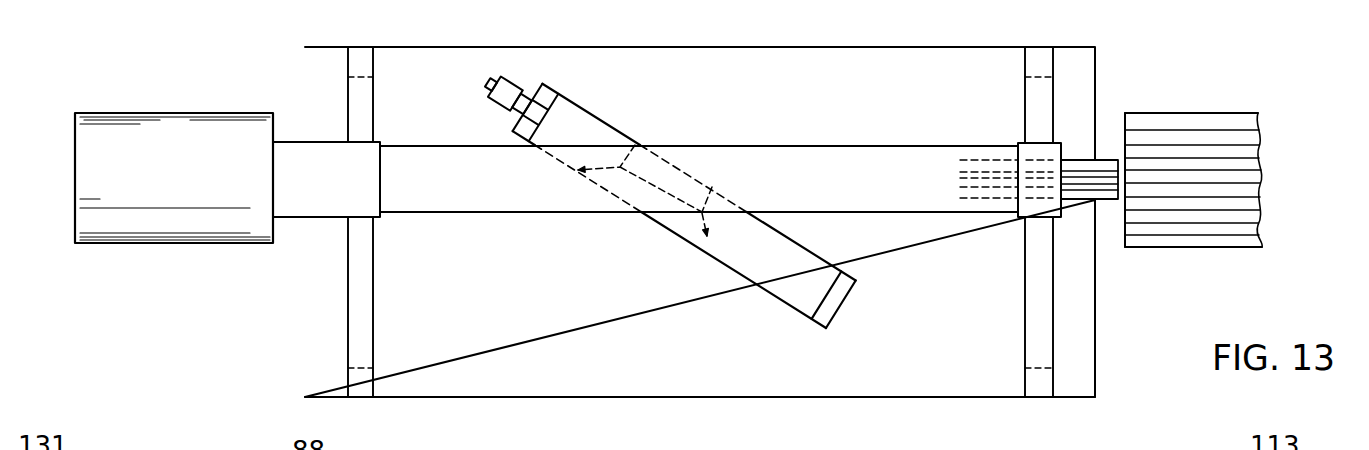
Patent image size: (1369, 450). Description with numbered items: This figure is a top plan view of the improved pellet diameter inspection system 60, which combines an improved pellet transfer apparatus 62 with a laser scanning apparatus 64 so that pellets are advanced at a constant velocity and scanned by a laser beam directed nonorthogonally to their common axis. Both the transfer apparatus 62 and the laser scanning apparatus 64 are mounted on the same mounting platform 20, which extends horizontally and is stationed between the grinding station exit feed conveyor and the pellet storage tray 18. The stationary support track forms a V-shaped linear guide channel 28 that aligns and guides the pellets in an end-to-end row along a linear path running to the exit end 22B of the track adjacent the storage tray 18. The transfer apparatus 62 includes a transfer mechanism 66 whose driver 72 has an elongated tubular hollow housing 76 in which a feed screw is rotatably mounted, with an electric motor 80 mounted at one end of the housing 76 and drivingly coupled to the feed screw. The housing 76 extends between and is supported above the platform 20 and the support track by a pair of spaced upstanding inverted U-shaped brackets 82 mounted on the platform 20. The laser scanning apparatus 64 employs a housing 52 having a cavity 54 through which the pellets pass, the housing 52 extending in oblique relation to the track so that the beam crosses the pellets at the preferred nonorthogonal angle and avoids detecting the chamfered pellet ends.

The storage tray 18 is at (1233, 247).
The mounting platform 20 is at (843, 398).
The exit end 22B is at (1101, 205).
The linear guide channel 28 is at (1101, 158).
The housing 52 is at (827, 257).
The cavity 54 is at (700, 228).
The pellet diameter inspection system 60 is at (1127, 72).
The pellet transfer apparatus 62 is at (900, 47).
The laser scanning apparatus 64 is at (746, 293).
The transfer mechanism 66 is at (810, 130).
The driver 72 is at (332, 140).
The tubular hollow housing 76 is at (723, 145).
The electric motor 80 is at (178, 243).
The inverted U-shaped brackets 82 is at (347, 328).